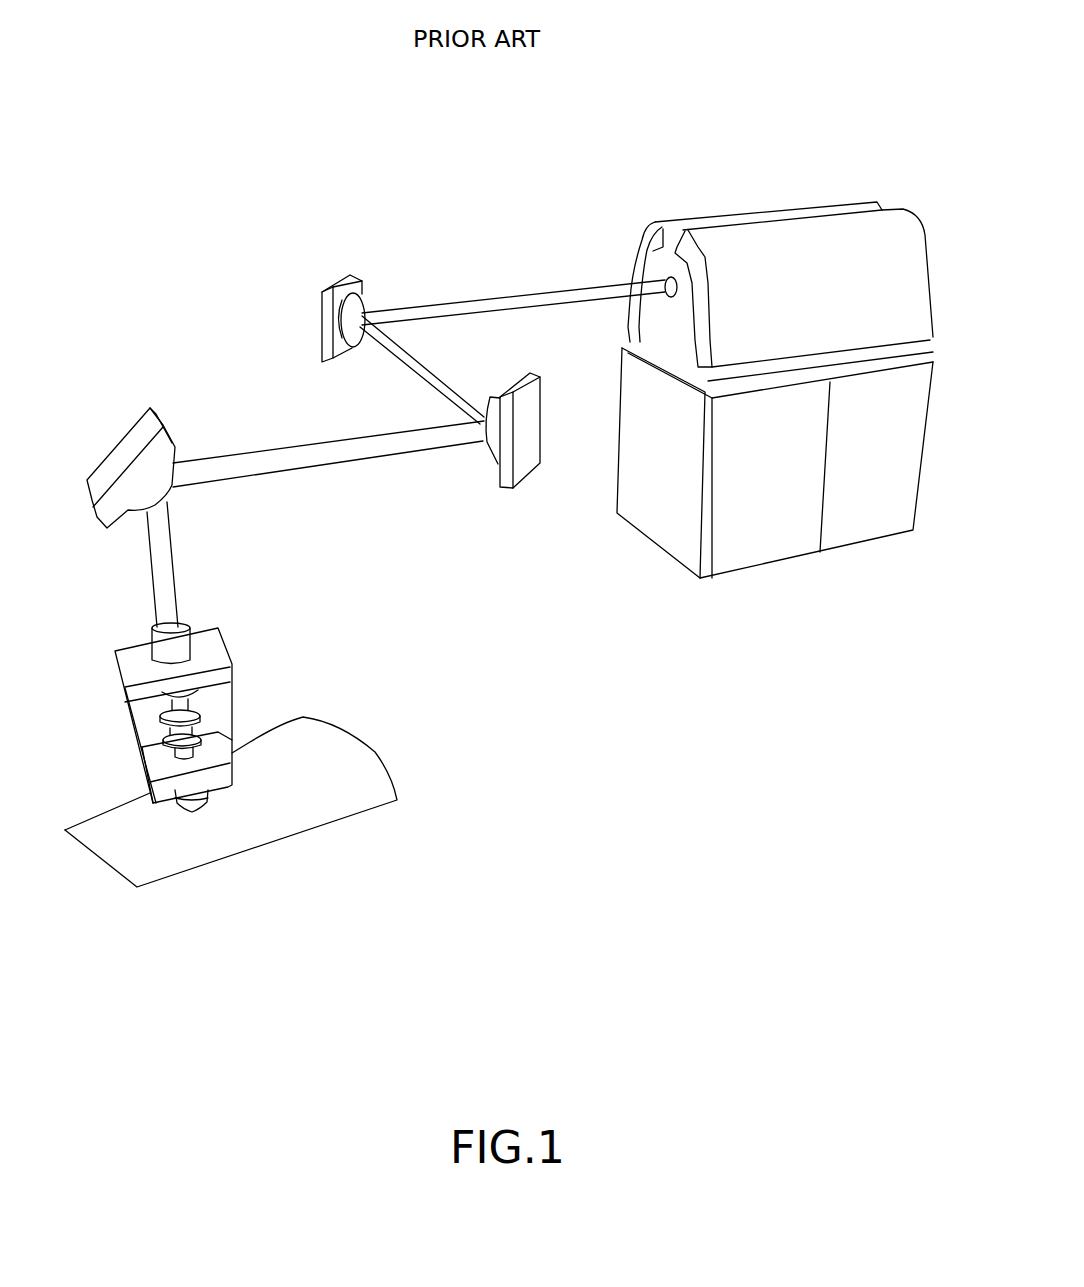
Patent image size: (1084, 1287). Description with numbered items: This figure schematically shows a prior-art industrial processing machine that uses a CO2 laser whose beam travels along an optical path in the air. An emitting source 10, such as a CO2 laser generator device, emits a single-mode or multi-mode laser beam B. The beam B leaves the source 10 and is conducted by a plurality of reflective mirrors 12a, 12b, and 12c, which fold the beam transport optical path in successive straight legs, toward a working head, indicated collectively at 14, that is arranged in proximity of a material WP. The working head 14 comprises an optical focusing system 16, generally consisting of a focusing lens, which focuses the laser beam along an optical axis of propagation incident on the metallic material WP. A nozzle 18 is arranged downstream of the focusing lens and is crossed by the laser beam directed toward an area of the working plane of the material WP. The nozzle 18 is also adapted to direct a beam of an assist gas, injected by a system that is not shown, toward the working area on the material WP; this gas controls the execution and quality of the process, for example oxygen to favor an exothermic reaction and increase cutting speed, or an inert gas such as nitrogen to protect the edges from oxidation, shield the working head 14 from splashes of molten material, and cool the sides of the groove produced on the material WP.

The emitting source 10 is at (808, 172).
The laser beam B is at (502, 294).
The reflective mirror 12a is at (330, 278).
The reflective mirror 12b is at (523, 450).
The reflective mirror 12c is at (133, 440).
The working head 14 is at (240, 631).
The optical focusing system 16 is at (203, 711).
The nozzle 18 is at (197, 811).
The material WP is at (147, 858).